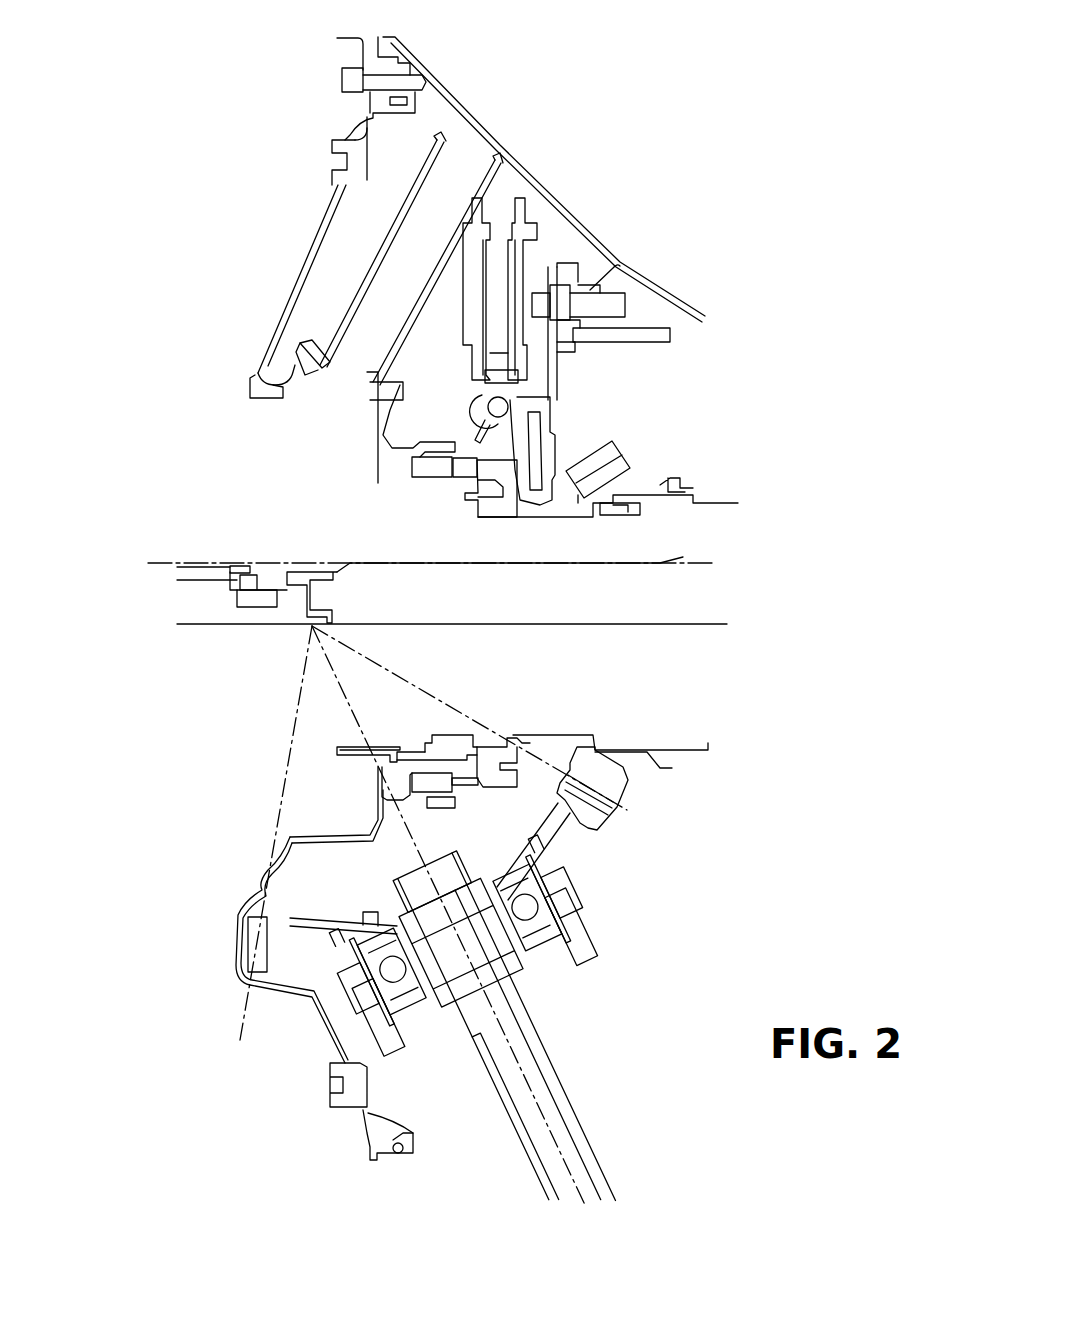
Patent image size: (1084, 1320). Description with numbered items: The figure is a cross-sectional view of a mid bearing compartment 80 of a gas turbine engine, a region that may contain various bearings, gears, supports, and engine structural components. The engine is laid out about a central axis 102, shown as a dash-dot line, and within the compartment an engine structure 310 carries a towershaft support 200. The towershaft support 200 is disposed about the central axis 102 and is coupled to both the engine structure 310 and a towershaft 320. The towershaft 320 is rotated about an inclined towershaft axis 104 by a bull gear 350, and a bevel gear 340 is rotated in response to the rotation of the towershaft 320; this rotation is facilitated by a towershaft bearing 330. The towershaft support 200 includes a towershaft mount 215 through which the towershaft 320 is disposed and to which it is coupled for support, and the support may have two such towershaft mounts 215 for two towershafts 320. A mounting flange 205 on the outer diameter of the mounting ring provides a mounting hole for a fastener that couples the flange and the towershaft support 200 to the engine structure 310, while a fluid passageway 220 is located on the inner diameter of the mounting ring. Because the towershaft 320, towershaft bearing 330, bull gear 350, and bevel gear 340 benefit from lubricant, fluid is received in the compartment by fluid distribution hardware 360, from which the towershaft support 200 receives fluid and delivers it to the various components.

The mid bearing compartment 80 is at (694, 150).
The central axis 102 is at (707, 560).
The towershaft axis 104 is at (517, 1062).
The towershaft support 200 is at (553, 312).
The mounting flange 205 is at (555, 352).
The towershaft mount 215 is at (570, 907).
The fluid passageway 220 is at (560, 372).
The engine structure 310 is at (600, 262).
The towershaft 320 is at (557, 1132).
The towershaft bearing 330 is at (530, 935).
The bevel gear 340 is at (247, 943).
The bull gear 350 is at (602, 774).
The fluid distribution hardware 360 is at (487, 407).